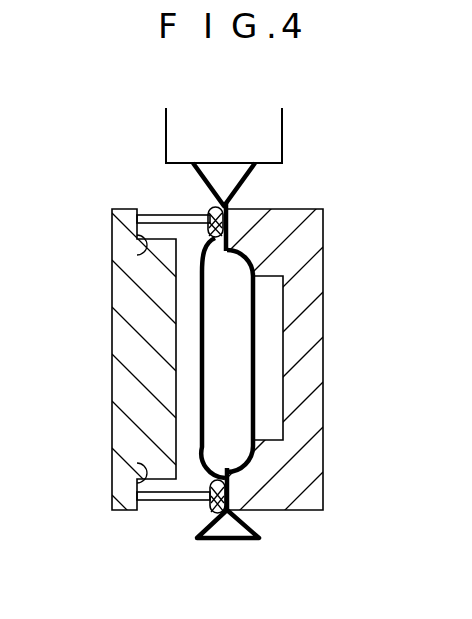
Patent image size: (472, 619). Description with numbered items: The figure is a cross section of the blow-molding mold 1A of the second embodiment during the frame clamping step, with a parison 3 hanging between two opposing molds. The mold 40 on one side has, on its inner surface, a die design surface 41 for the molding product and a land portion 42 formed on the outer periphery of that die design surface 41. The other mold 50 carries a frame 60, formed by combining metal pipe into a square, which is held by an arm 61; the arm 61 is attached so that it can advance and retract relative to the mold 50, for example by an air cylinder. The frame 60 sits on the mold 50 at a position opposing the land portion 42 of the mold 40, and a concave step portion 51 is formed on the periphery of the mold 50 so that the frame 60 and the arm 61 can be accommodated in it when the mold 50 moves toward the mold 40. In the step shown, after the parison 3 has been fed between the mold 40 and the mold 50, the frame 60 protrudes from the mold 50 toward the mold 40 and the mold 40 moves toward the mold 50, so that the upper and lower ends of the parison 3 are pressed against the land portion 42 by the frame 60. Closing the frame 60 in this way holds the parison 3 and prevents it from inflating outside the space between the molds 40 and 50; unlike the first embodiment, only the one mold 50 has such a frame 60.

The blow-molding mold 1A is at (352, 120).
The parison 3 is at (230, 538).
The mold 40 is at (322, 386).
The die design surface 41 is at (286, 313).
The land portion 42 is at (225, 205).
The mold 50 is at (122, 345).
The concave step portion 51 is at (133, 256).
The frame 60 is at (209, 210).
The arm 61 is at (167, 215).